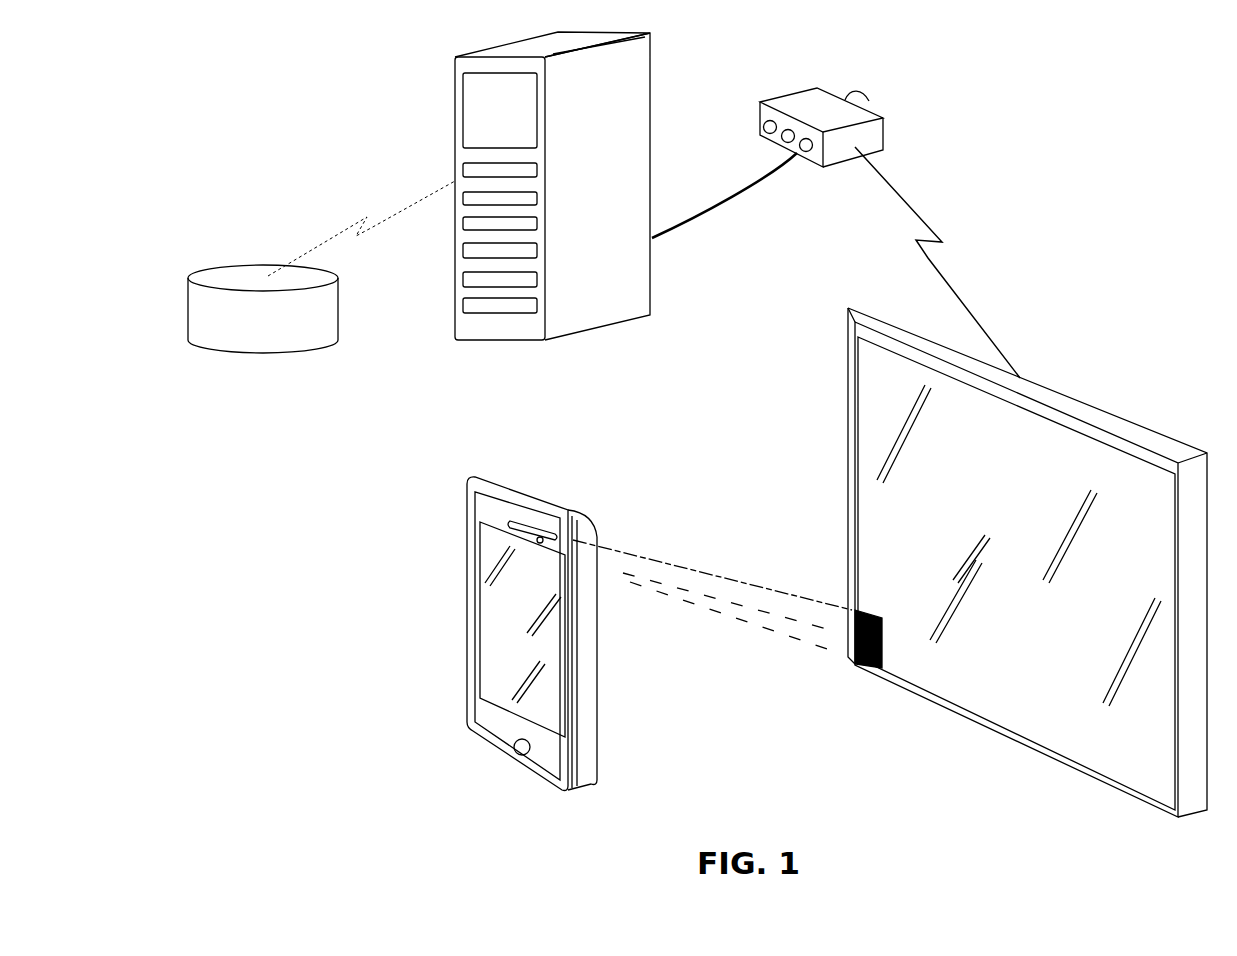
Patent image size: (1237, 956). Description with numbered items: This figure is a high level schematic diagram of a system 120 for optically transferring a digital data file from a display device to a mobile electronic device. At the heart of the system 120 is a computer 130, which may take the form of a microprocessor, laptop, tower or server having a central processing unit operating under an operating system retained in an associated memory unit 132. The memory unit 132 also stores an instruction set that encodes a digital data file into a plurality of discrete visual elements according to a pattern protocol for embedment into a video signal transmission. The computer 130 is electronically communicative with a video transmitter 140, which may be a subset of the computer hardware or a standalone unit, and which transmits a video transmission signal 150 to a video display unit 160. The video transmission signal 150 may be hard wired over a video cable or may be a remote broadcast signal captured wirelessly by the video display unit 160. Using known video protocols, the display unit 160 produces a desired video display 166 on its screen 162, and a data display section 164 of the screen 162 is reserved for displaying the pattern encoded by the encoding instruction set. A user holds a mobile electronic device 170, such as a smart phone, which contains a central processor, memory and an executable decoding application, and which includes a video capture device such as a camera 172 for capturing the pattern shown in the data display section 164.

The system 120 is at (1106, 165).
The computer 130 is at (652, 165).
The memory unit 132 is at (307, 328).
The video transmitter 140 is at (883, 137).
The video transmission signal 150 is at (898, 203).
The video display unit 160 is at (1043, 387).
The screen 162 is at (1003, 630).
The data display section 164 is at (858, 662).
The video display 166 is at (730, 612).
The mobile electronic device 170 is at (588, 665).
The camera 172 is at (568, 500).